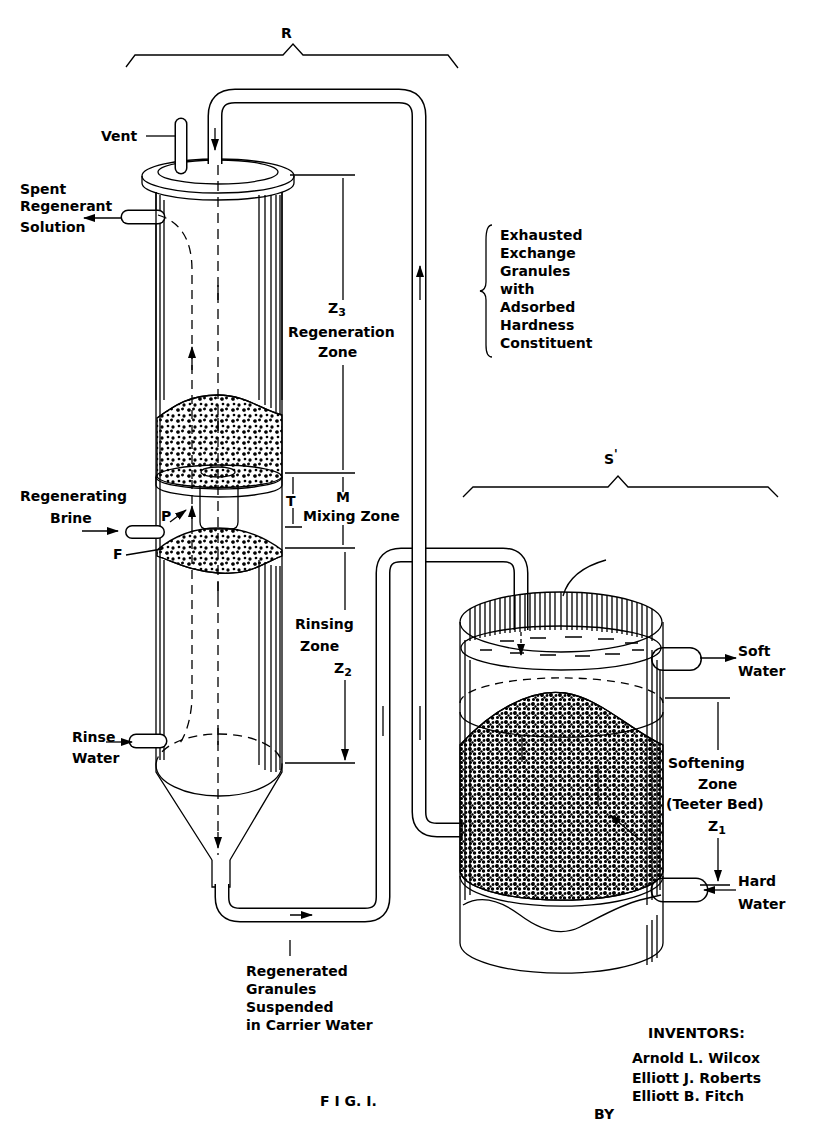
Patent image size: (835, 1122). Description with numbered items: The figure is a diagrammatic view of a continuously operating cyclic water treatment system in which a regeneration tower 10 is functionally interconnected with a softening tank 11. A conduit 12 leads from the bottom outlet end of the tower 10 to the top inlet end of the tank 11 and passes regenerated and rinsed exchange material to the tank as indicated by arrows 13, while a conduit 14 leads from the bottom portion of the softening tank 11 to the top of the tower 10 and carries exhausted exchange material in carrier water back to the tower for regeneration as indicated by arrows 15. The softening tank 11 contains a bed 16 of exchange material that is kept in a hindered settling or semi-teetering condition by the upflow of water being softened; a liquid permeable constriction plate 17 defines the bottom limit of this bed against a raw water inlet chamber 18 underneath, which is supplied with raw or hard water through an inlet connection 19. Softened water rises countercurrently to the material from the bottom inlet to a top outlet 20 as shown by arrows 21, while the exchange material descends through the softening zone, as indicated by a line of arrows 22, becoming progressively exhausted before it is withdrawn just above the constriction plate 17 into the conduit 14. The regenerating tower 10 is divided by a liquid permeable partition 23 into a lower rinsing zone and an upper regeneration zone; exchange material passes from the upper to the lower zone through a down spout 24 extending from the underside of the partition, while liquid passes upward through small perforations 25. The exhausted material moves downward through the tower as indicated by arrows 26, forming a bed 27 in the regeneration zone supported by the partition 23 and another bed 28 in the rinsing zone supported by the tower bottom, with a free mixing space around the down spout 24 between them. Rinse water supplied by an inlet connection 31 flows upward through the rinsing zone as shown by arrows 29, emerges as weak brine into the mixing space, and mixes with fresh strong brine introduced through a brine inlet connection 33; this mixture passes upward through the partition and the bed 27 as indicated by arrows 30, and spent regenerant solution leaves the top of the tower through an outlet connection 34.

The regeneration tower 10 is at (154, 355).
The softening tank 11 is at (668, 626).
The conduit 12 is at (368, 928).
The arrows 13 is at (380, 722).
The conduit 14 is at (428, 447).
The arrows 15 is at (481, 290).
The bed of exchange material 16 is at (480, 850).
The constriction plate 17 is at (562, 914).
The raw water inlet chamber 18 is at (494, 906).
The inlet connection 19 is at (698, 903).
The top outlet 20 is at (690, 652).
The arrows 21 is at (608, 670).
The line of arrows 22 is at (561, 796).
The liquid permeable partition 23 is at (162, 490).
The down spout 24 is at (226, 522).
The perforations 25 is at (240, 474).
The downwardly pointing arrows 26 is at (180, 262).
The bed of material 27 is at (178, 438).
The bed of material 28 is at (186, 560).
The arrows 29 is at (190, 628).
The arrows 30 is at (190, 379).
The inlet connection 31 is at (150, 750).
The brine inlet connection 33 is at (150, 528).
The outlet connection 34 is at (146, 226).